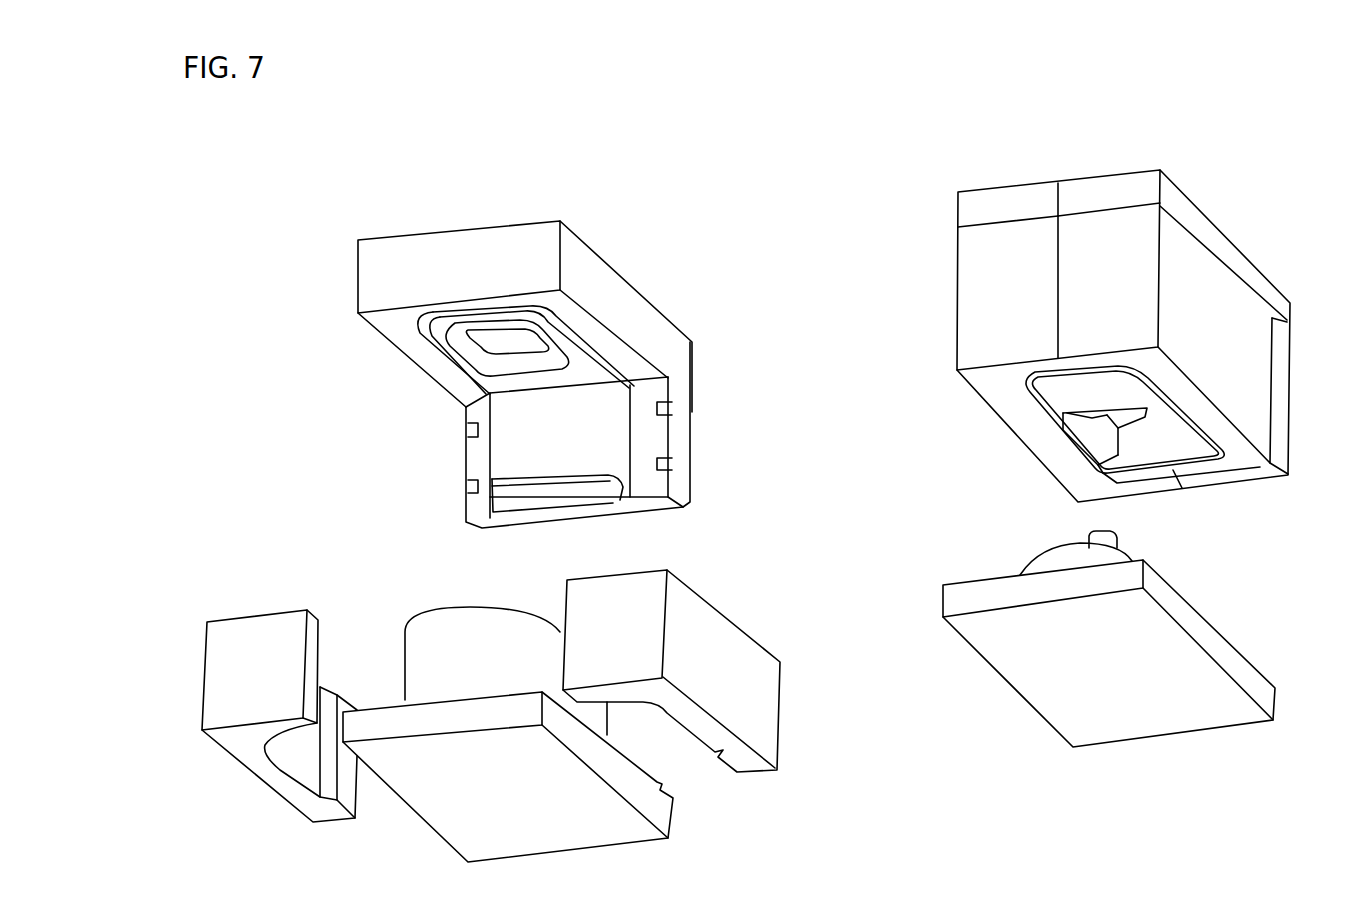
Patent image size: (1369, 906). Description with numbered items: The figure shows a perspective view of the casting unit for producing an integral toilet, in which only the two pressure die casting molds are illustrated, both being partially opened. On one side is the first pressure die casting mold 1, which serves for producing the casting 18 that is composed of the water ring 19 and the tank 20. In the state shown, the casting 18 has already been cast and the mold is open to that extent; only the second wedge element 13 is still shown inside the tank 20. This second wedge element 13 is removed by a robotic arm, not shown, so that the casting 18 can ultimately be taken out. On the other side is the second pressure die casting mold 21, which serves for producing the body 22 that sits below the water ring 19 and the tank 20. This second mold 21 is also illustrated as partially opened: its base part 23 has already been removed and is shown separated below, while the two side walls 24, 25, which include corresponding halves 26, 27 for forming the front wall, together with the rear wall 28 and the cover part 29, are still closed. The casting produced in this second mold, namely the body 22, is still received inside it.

The first pressure die casting mold 1 is at (640, 214).
The second wedge element 13 is at (512, 502).
The casting 18 is at (455, 381).
The water ring 19 is at (582, 370).
The tank 20 is at (613, 438).
The second pressure die casting mold 21 is at (1258, 212).
The body 22 is at (1087, 397).
The base part 23 is at (1188, 720).
The side wall 24 is at (1247, 382).
The side wall 25 is at (995, 387).
The half for forming the front wall 26 is at (1102, 237).
The half for forming the front wall 27 is at (1010, 250).
The rear wall 28 is at (1212, 475).
The cover part 29 is at (1248, 275).